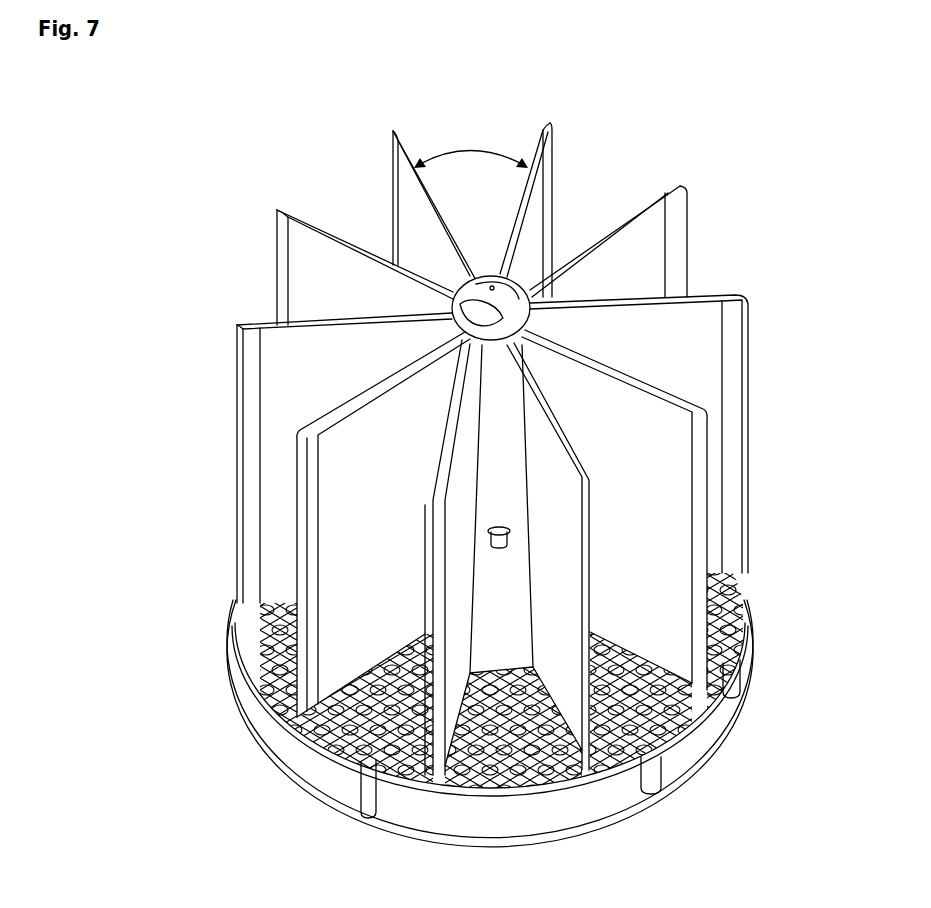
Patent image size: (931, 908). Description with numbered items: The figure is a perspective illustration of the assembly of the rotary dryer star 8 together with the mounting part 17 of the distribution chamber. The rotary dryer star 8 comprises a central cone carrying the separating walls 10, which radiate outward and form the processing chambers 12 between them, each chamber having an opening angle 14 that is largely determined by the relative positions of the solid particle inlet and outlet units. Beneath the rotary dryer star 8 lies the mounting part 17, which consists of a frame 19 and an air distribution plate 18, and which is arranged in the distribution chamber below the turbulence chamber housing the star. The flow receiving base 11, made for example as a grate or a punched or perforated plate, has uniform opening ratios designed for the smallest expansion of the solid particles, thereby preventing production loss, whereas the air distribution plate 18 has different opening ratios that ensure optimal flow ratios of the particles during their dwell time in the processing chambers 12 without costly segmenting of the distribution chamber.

The rotary dryer star 8 is at (479, 423).
The separating walls 10 is at (613, 367).
The flow receiving base 11 is at (388, 738).
The processing chambers 12 is at (258, 416).
The opening angle 14 is at (471, 140).
The mounting part 17 is at (233, 746).
The air distribution plate 18 is at (603, 713).
The frame 19 is at (626, 818).